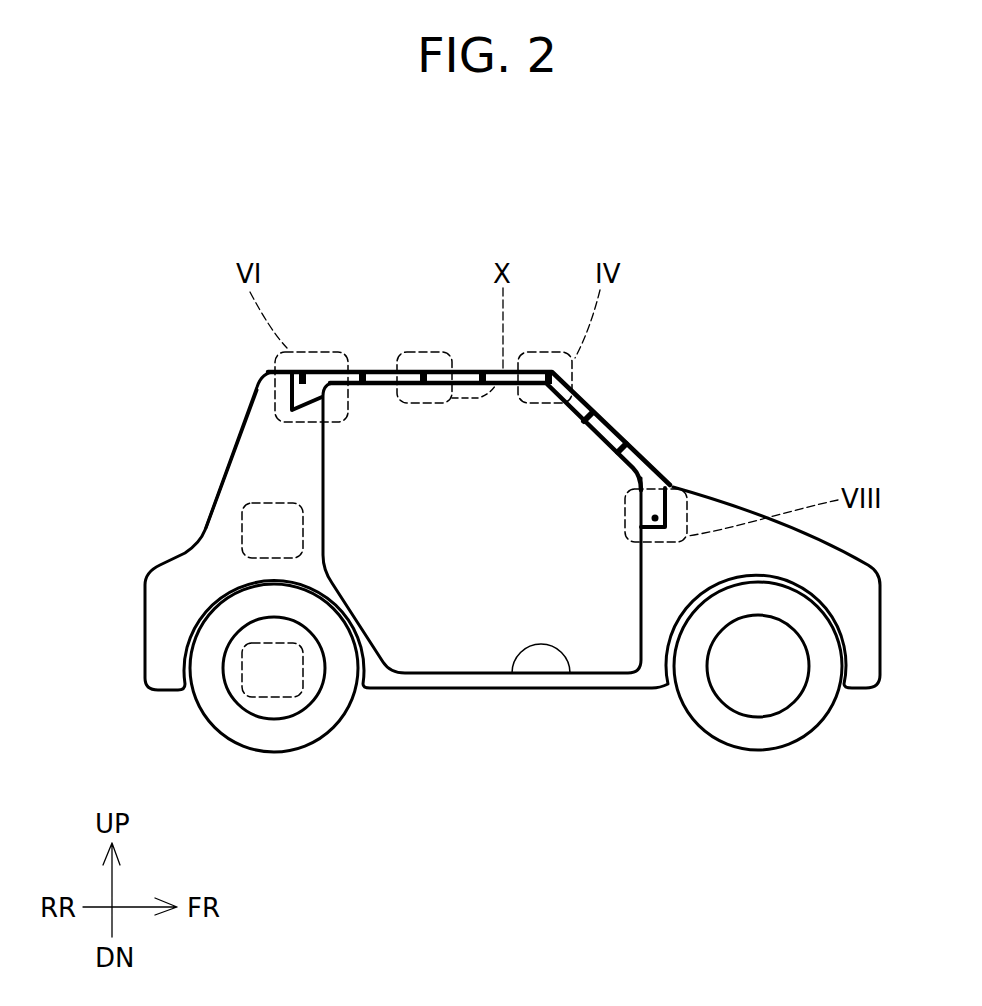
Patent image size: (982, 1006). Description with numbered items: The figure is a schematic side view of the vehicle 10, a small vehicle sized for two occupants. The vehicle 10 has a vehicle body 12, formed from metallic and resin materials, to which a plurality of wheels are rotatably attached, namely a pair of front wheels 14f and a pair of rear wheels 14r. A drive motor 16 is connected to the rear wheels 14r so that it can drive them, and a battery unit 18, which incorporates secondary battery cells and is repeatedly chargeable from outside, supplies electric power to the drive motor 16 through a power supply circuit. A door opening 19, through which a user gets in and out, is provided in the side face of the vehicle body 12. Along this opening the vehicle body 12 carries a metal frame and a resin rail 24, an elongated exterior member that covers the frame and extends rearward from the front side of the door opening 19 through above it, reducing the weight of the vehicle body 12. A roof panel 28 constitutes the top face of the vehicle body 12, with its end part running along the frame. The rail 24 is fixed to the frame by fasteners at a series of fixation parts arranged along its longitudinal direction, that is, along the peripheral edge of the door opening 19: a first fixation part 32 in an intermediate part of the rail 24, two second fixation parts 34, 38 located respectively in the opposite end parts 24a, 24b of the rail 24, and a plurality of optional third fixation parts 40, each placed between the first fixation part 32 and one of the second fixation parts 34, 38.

The vehicle 10 is at (696, 233).
The vehicle body 12 is at (272, 428).
The rear wheels 14r is at (218, 708).
The front wheels 14f is at (810, 705).
The drive motor 16 is at (278, 700).
The battery unit 18 is at (263, 503).
The door opening 19 is at (512, 675).
The rail 24 is at (585, 398).
The end part of rail 24a is at (263, 372).
The end part of rail 24b is at (688, 510).
The roof panel 28 is at (353, 372).
The first fixation part 32 is at (548, 372).
The second fixation part 34 is at (302, 372).
The second fixation part 38 is at (655, 518).
The third fixation parts 40 is at (482, 372).